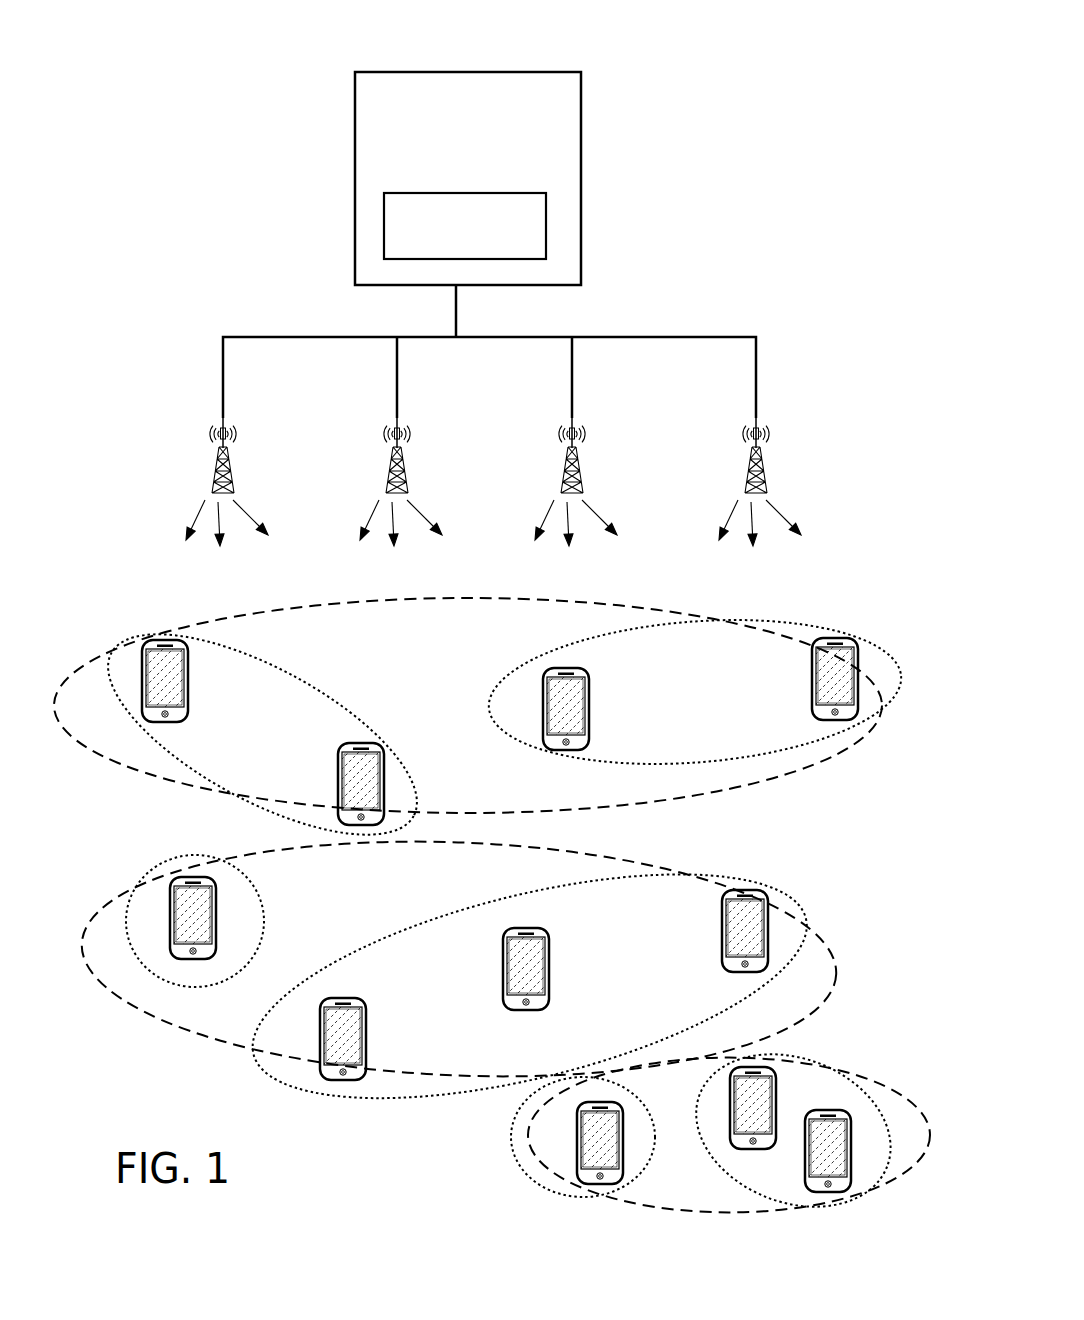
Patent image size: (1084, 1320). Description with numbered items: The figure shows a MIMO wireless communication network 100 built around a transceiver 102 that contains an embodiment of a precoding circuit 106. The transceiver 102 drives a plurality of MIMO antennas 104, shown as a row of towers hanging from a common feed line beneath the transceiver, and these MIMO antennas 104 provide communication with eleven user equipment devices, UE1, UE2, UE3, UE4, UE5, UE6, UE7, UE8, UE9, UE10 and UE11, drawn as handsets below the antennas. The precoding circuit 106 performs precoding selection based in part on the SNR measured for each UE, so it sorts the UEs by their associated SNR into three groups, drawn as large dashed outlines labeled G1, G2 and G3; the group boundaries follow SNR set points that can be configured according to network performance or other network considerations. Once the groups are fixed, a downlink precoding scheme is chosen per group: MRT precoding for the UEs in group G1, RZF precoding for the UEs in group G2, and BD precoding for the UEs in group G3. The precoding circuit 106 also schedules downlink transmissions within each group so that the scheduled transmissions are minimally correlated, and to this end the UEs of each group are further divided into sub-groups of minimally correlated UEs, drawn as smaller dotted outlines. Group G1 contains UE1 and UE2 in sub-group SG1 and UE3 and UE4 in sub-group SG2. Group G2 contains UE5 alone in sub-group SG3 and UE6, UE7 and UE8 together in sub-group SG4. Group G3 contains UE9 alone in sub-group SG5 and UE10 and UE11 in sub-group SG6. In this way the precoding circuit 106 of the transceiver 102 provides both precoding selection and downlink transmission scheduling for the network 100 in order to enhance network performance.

The MIMO wireless communication network 100 is at (754, 72).
The transceiver 102 is at (421, 178).
The MIMO antennas 104 is at (182, 328).
The precoding circuit 106 is at (403, 217).
The group G1 is at (468, 689).
The group G2 is at (486, 958).
The group G3 is at (734, 1128).
The sub-group SG1 is at (262, 735).
The sub-group SG2 is at (674, 692).
The sub-group SG3 is at (234, 921).
The sub-group SG4 is at (530, 987).
The sub-group SG5 is at (540, 1142).
The sub-group SG6 is at (786, 1130).
The user equipment UE1 is at (192, 690).
The user equipment UE2 is at (375, 793).
The user equipment UE3 is at (593, 718).
The user equipment UE4 is at (848, 688).
The user equipment UE5 is at (220, 927).
The user equipment UE6 is at (370, 1048).
The user equipment UE7 is at (540, 978).
The user equipment UE8 is at (757, 940).
The user equipment UE9 is at (615, 1152).
The user equipment UE10 is at (780, 1117).
The user equipment UE11 is at (836, 1160).